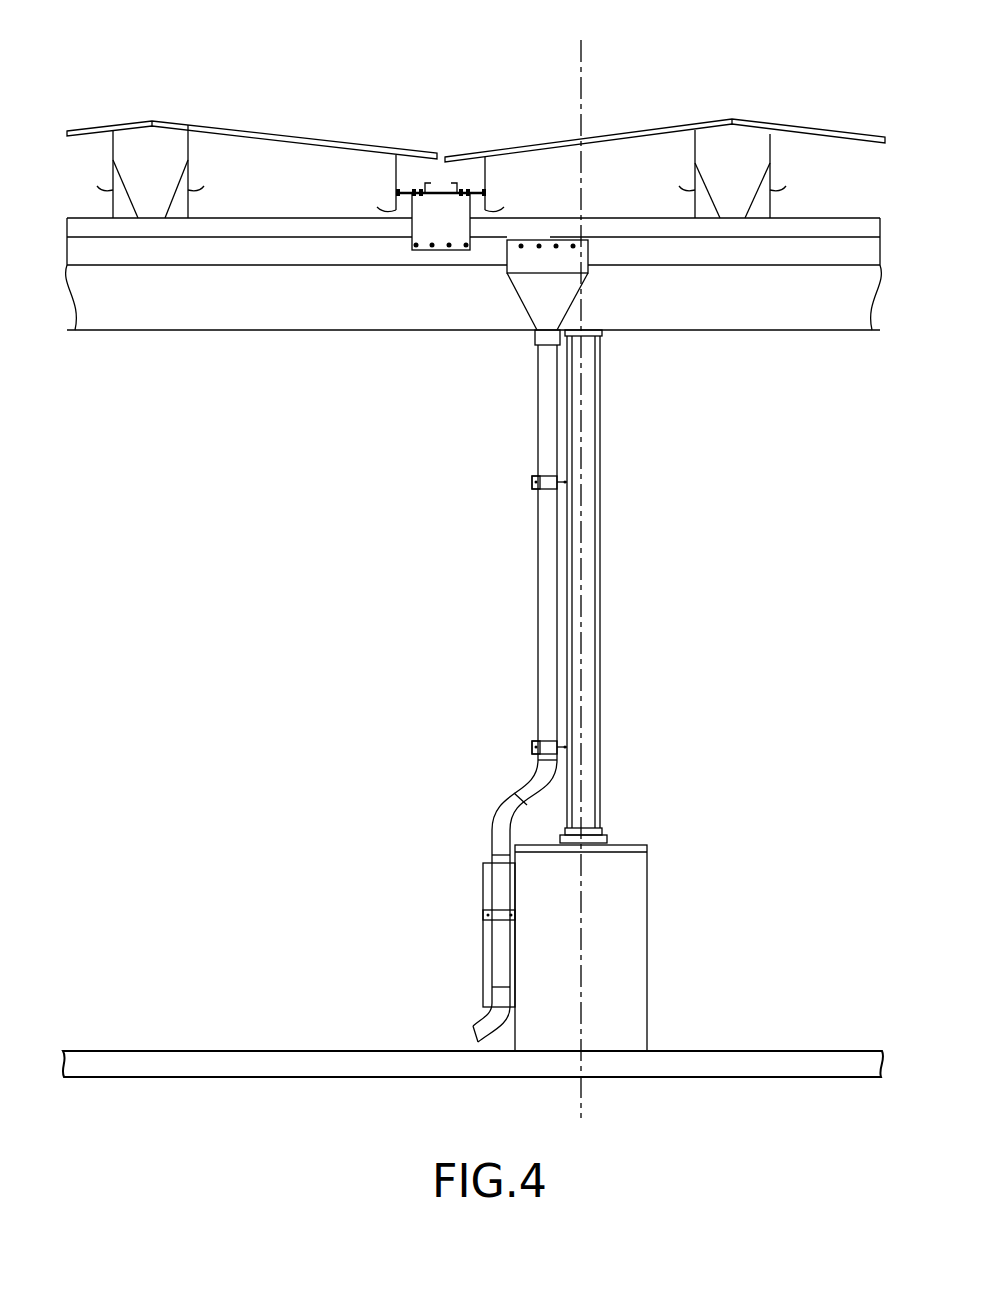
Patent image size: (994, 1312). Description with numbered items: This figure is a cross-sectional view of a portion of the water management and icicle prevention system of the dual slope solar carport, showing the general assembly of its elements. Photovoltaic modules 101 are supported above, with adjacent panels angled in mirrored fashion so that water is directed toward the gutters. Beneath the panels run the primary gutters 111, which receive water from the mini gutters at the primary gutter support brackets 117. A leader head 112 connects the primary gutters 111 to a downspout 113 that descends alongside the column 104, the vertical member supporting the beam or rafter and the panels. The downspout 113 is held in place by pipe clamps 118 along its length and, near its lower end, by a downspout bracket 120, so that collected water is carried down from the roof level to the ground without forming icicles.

The photovoltaic modules 101 is at (692, 112).
The primary gutters 111 is at (279, 274).
The primary gutter support brackets 117 is at (421, 258).
The leader heads 112 is at (511, 318).
The downspouts 113 is at (536, 517).
The pipe clamps 118 is at (523, 735).
The column 104 is at (598, 676).
The downspout brackets 120 is at (478, 852).